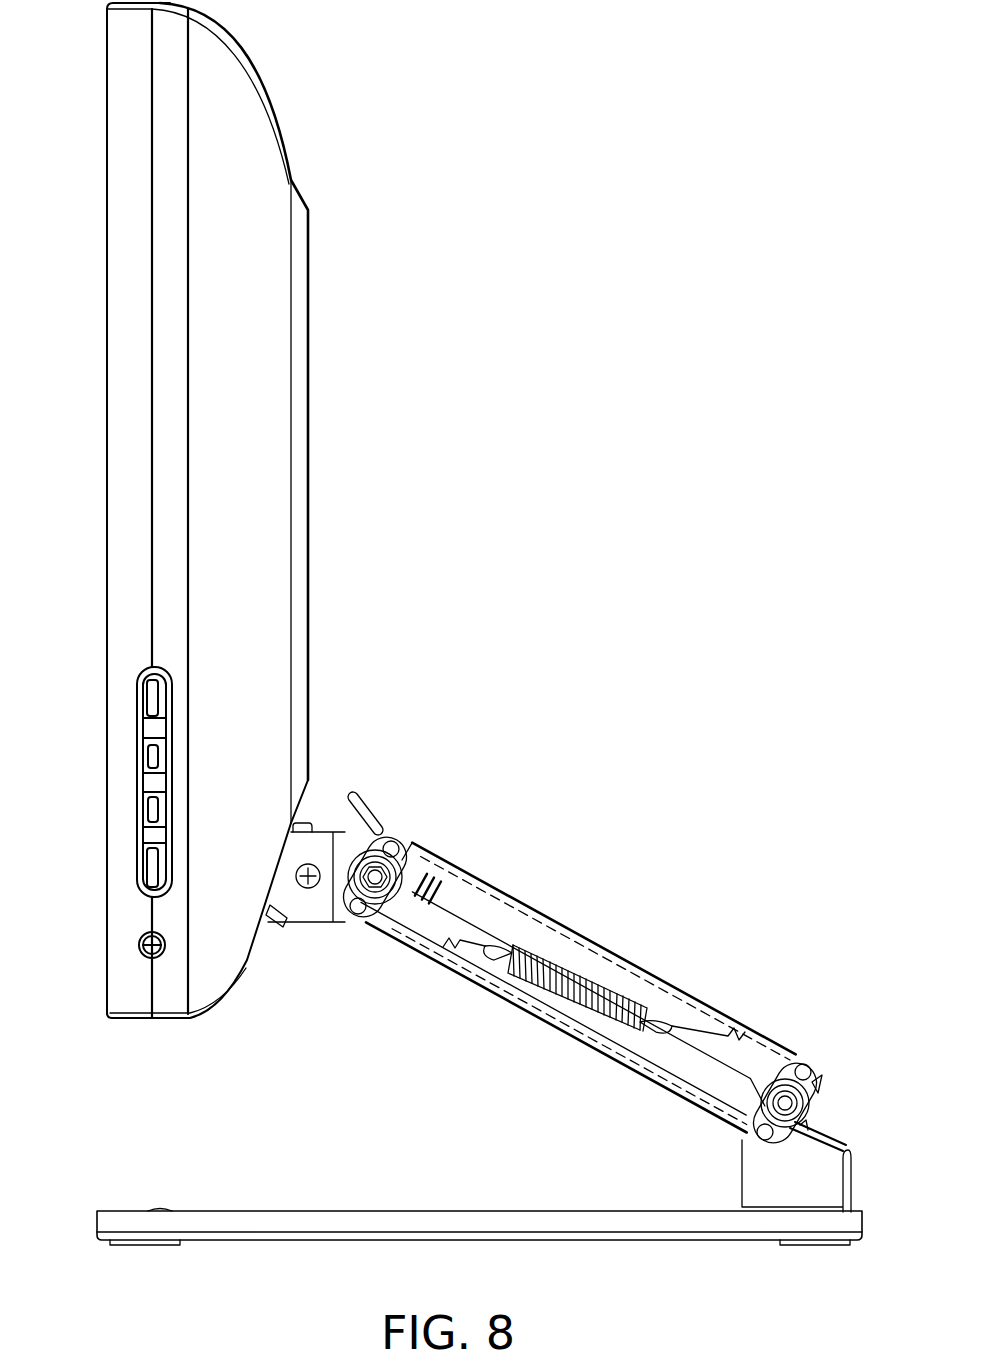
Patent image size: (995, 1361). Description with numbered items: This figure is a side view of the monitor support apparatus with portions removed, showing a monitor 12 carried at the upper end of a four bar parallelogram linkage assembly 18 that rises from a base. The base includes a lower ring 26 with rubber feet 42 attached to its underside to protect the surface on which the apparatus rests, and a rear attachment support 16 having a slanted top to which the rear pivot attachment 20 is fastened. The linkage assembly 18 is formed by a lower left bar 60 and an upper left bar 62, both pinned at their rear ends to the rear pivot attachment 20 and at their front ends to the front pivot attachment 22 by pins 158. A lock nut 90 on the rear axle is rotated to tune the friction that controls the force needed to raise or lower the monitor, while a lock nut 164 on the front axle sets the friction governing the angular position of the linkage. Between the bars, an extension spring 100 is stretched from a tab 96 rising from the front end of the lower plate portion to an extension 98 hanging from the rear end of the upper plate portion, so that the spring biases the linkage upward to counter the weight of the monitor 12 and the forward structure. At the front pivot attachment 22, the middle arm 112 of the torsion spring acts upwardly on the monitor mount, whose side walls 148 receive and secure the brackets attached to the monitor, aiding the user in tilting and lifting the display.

The monitor 12 is at (253, 490).
The rear attachment support 16 is at (810, 1180).
The four bar parallelogram linkage assembly 18 is at (578, 964).
The rear pivot attachment 20 is at (818, 1052).
The front pivot attachment 22 is at (399, 815).
The lower ring 26 is at (108, 1224).
The rubber feet 42 is at (130, 1245).
The lower left bar 60 is at (505, 995).
The upper left bar 62 is at (540, 935).
The lock nut 90 is at (800, 1103).
The tabs 96 is at (455, 940).
The extensions 98 is at (736, 1030).
The extension springs 100 is at (608, 1000).
The middle arm 112 is at (356, 793).
The side walls 148 is at (310, 912).
The pins 158 is at (400, 834).
The lock nut 164 is at (380, 900).